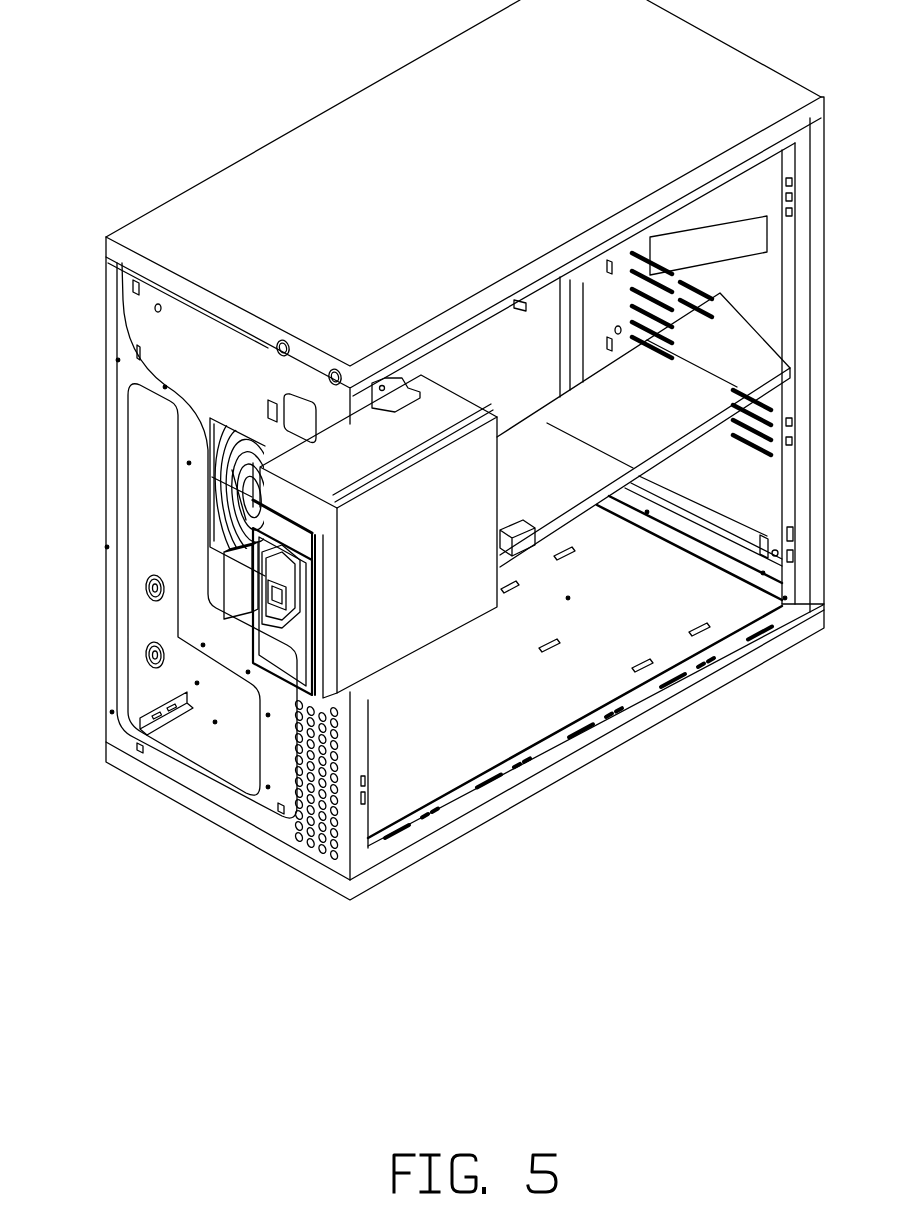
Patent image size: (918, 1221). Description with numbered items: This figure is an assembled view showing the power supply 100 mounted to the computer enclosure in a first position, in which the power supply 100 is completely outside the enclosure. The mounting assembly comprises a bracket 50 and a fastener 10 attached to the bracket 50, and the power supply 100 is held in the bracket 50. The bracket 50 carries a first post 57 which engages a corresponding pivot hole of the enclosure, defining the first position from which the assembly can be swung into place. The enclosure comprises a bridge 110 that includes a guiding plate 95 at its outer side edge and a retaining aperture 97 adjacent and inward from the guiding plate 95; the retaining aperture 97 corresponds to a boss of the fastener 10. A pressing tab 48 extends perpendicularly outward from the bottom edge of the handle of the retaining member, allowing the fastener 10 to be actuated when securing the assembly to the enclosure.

The fastener 10 is at (333, 647).
The pressing tab 48 is at (222, 610).
The bracket 50 is at (333, 456).
The first post 57 is at (383, 386).
The guiding plate 95 is at (518, 303).
The retaining aperture 97 is at (523, 516).
The power supply 100 is at (428, 607).
The bridge 110 is at (682, 420).